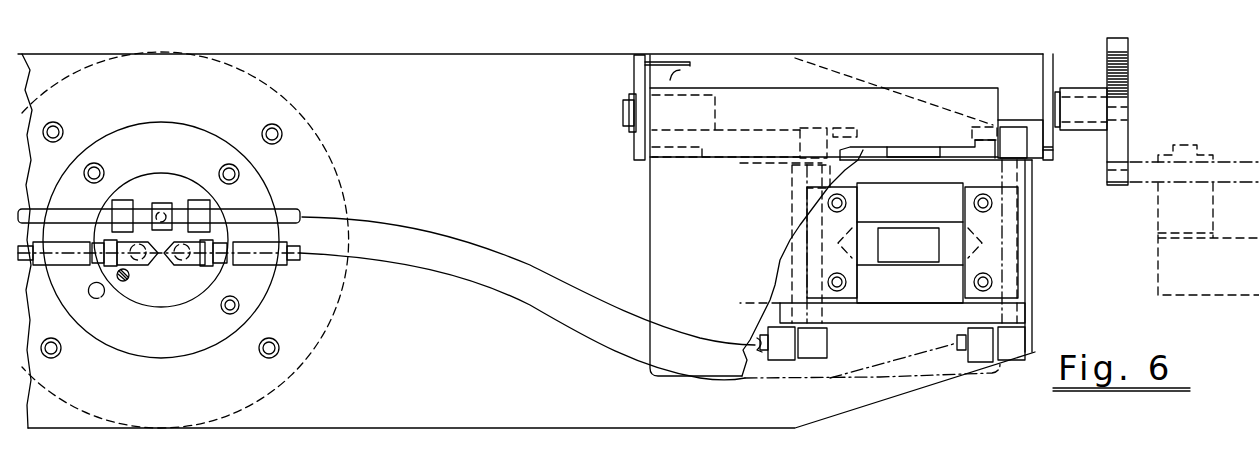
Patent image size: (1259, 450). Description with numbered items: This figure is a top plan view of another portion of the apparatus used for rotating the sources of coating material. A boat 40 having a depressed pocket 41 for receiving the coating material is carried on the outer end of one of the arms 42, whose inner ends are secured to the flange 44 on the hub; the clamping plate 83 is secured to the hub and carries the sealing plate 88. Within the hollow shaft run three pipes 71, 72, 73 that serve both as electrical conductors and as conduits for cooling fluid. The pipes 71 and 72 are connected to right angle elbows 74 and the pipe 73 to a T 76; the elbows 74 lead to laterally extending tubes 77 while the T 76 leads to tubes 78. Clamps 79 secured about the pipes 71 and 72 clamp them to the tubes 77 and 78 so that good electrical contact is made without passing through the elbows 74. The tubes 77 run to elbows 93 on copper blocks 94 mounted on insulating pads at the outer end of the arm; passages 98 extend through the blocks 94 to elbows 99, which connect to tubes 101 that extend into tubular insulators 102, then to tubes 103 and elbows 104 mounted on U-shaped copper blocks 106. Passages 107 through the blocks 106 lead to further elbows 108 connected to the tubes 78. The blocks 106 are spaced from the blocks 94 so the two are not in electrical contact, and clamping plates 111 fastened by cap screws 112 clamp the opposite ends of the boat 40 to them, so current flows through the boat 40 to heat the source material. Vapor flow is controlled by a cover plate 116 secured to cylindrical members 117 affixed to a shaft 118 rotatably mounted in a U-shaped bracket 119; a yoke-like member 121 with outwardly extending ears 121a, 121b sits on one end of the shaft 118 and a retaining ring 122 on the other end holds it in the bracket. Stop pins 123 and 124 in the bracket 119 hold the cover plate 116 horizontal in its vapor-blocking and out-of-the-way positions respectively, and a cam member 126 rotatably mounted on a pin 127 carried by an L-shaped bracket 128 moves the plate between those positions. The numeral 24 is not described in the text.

The base plate 24 is at (218, 443).
The boat 40 is at (925, 262).
The depressed pocket 41 is at (900, 262).
The arm 42 is at (510, 363).
The flange 44 is at (322, 345).
The pipe 71 is at (140, 268).
The pipe 72 is at (170, 268).
The pipe 73 is at (165, 200).
The right angle elbow 74 is at (122, 281).
The T 76 is at (181, 210).
The tube 77 is at (30, 265).
The tube 78 is at (65, 208).
The clamp 79 is at (68, 260).
The clamping plate 83 is at (222, 331).
The sealing plate 88 is at (202, 287).
The elbow 93 is at (1008, 360).
The block 94 is at (1030, 300).
The passage 98 is at (1010, 180).
The elbow 99 is at (1055, 150).
The tube 101 is at (955, 158).
The tubular insulator 102 is at (905, 158).
The tube 103 is at (872, 128).
The elbow 104 is at (812, 128).
The U-shaped block 106 is at (905, 320).
The passage 107 is at (800, 308).
The elbow 108 is at (812, 358).
The clamping plate 111 is at (807, 290).
The cap screw 112 is at (837, 196).
The cover plate 116 is at (690, 378).
The cylindrical member 117 is at (680, 90).
The shaft 118 is at (1017, 105).
The U-shaped bracket 119 is at (655, 70).
The yoke-like member 121 is at (1102, 143).
The ear 121a is at (1122, 48).
The ear 121b is at (1118, 178).
The retaining ring 122 is at (630, 95).
The stop pin 123 is at (670, 150).
The stop pin 124 is at (680, 62).
The cam member 126 is at (1225, 158).
The pin 127 is at (1190, 145).
The L-shaped bracket 128 is at (1205, 295).